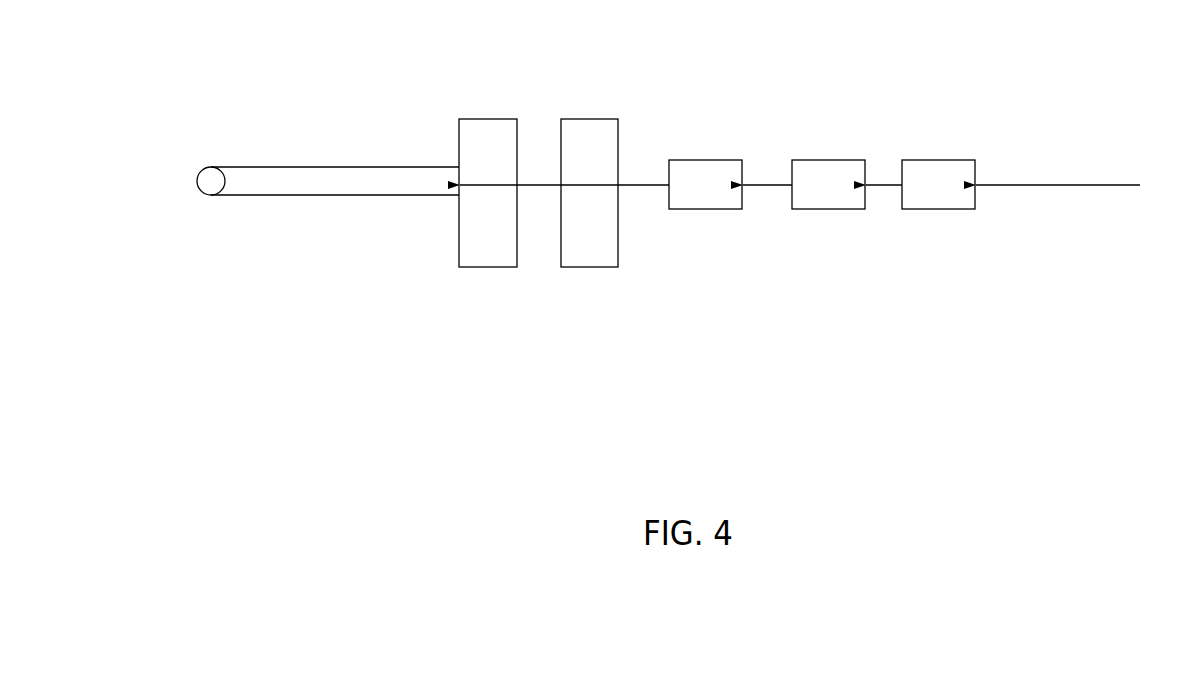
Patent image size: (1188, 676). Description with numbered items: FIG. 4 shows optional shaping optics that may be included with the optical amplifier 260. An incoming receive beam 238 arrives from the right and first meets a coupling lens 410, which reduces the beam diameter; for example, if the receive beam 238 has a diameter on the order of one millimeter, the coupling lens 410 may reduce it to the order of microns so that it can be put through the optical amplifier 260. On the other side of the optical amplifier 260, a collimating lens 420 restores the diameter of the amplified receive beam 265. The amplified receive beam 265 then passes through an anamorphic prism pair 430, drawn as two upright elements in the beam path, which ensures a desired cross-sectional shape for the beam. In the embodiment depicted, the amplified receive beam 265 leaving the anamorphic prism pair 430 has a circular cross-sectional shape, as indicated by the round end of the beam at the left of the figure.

The amplified receive beam 265 is at (320, 167).
The anamorphic prism pair 430 is at (588, 118).
The collimating lens 420 is at (728, 200).
The optical amplifier 260 is at (851, 200).
The coupling lens 410 is at (961, 200).
The receive beam 238 is at (1032, 185).